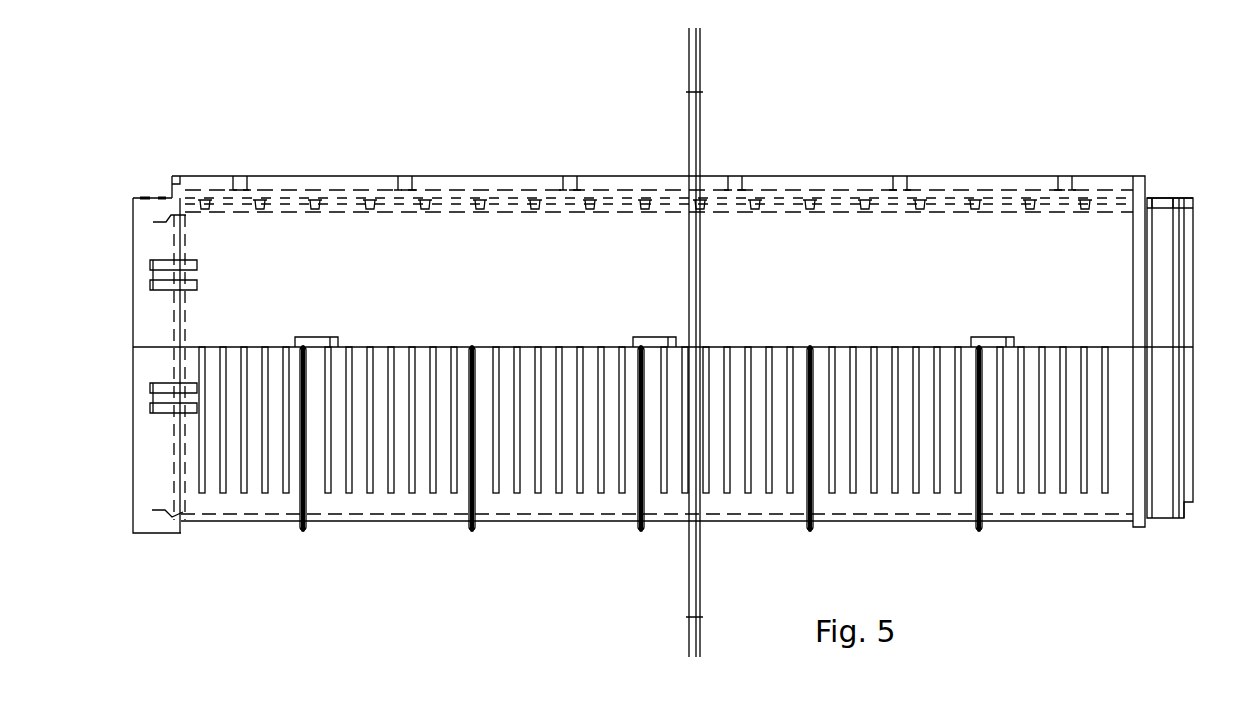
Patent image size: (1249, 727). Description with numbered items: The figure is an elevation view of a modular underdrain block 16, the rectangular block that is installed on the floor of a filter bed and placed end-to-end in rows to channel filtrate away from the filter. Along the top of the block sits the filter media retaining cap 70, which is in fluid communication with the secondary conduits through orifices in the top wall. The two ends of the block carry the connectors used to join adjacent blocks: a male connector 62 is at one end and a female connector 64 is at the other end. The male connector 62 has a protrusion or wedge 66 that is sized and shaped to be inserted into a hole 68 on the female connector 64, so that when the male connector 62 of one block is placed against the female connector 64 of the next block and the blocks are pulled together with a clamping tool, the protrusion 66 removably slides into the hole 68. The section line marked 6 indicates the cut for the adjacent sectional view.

The section line 6- 6 is at (676, 68).
The modular underdrain block 16 is at (478, 155).
The male connector 62 is at (1168, 203).
The female connector 64 is at (138, 197).
The protrusion 66 is at (1160, 196).
The hole 68 is at (150, 218).
The filter media retaining cap 70 is at (322, 205).